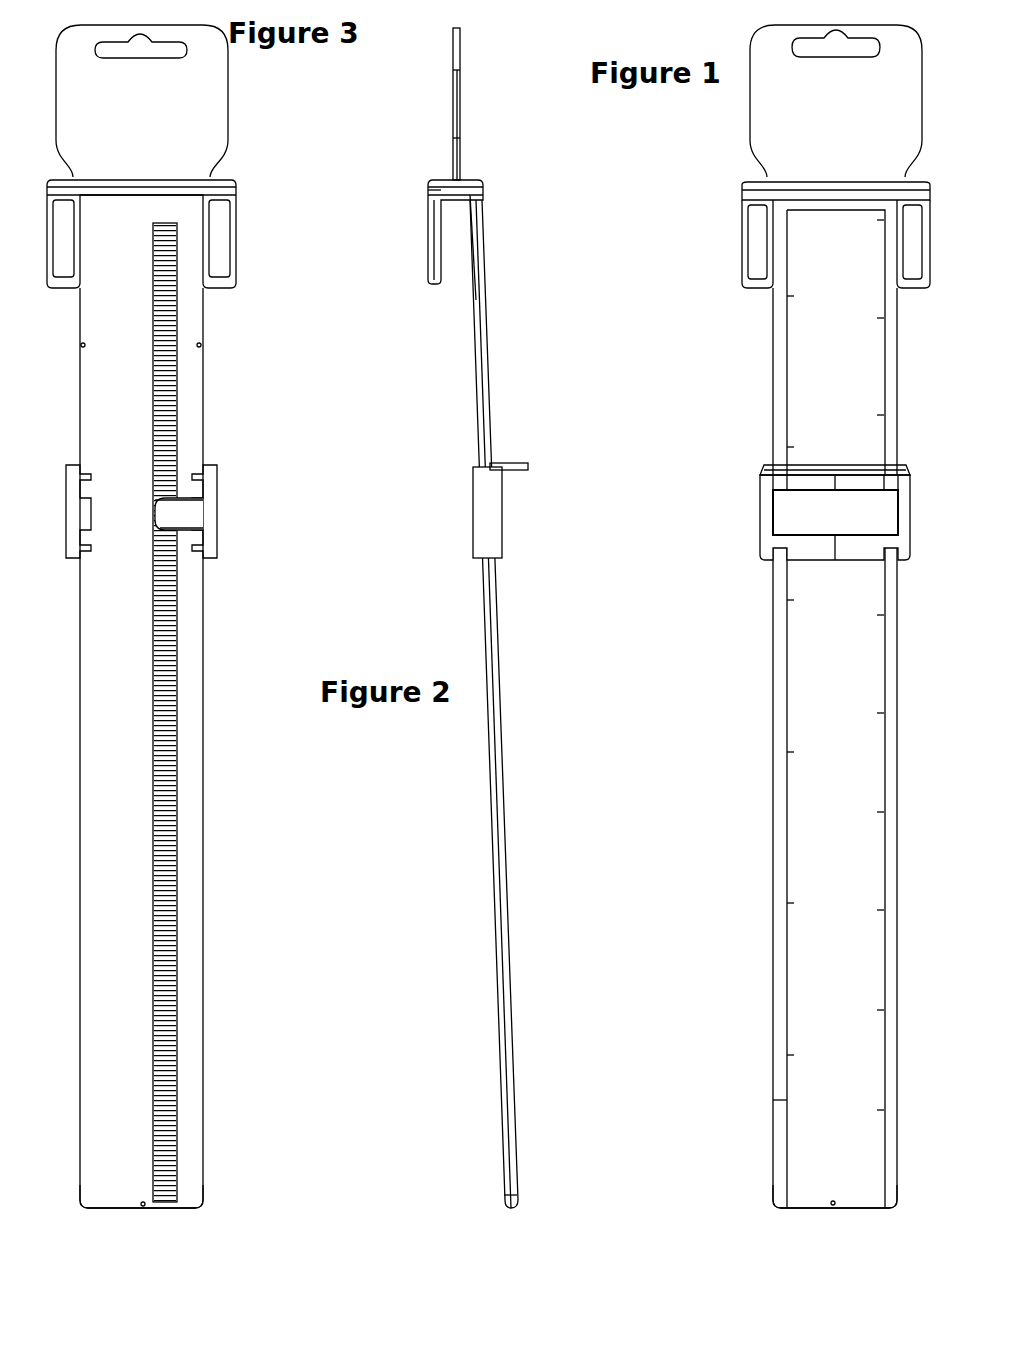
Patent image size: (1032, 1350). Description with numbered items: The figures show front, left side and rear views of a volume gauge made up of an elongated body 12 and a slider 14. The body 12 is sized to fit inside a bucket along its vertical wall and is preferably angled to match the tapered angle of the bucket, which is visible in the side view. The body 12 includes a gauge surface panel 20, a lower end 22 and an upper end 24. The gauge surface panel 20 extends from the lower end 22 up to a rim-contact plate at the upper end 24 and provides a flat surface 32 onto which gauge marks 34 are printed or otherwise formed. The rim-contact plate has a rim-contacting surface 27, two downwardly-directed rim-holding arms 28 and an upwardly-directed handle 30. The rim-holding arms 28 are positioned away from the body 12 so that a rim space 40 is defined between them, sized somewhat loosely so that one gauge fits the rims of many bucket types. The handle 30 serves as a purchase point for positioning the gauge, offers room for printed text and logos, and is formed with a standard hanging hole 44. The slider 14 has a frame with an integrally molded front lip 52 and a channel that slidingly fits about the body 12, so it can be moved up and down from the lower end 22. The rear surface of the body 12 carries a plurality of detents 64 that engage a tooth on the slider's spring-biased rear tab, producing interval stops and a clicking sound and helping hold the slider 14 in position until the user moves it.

In FIG. 3, the body 12 is at (103, 722).
In FIG. 2, the body 12 is at (485, 290).
In FIG. 1, the body 12 is at (806, 975).
In FIG. 3, the slider 14 is at (213, 510).
In FIG. 2, the slider 14 is at (487, 512).
In FIG. 1, the slider 14 is at (757, 497).
In FIG. 1, the gauge surface panel 20 is at (806, 1103).
In FIG. 3, the lower end 22 is at (196, 1195).
In FIG. 2, the lower end 22 is at (522, 1198).
In FIG. 1, the lower end 22 is at (790, 1195).
In FIG. 2, the upper end 24 is at (483, 200).
In FIG. 1, the upper end 24 is at (775, 210).
In FIG. 2, the rim-contacting surface 27 is at (455, 196).
In FIG. 3, the rim-holding arms 28 is at (218, 256).
In FIG. 2, the rim-holding arms 28 is at (425, 242).
In FIG. 1, the rim-holding arms 28 is at (752, 255).
In FIG. 1, the handle 30 is at (757, 132).
In FIG. 1, the flat surface 32 is at (815, 662).
In FIG. 1, the gauge marks 34 is at (797, 890).
In FIG. 2, the rim space 40 is at (455, 253).
In FIG. 3, the hanging hole 44 is at (145, 50).
In FIG. 2, the front lip 52 is at (510, 462).
In FIG. 3, the detents 64 is at (178, 890).